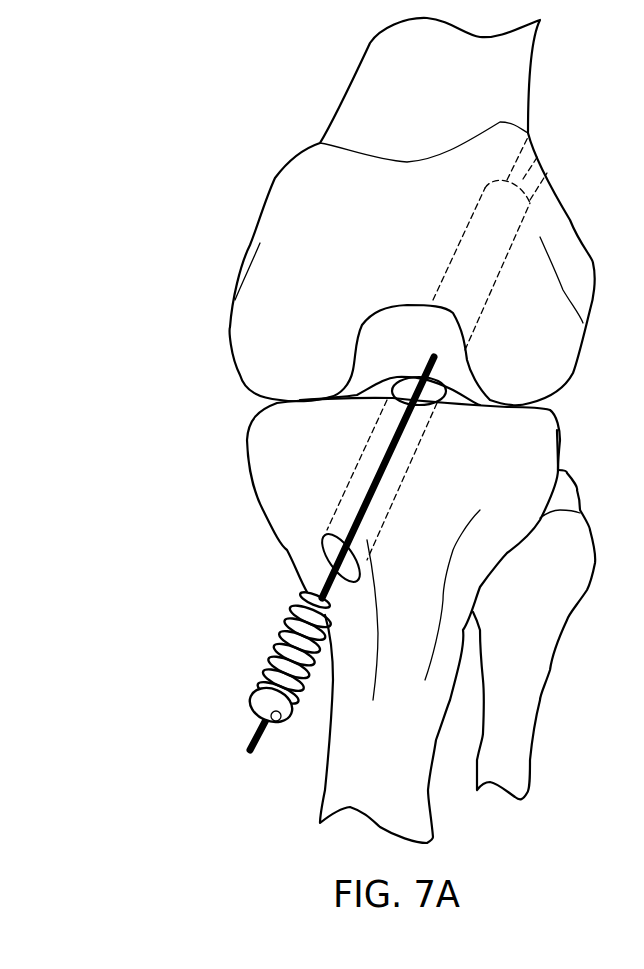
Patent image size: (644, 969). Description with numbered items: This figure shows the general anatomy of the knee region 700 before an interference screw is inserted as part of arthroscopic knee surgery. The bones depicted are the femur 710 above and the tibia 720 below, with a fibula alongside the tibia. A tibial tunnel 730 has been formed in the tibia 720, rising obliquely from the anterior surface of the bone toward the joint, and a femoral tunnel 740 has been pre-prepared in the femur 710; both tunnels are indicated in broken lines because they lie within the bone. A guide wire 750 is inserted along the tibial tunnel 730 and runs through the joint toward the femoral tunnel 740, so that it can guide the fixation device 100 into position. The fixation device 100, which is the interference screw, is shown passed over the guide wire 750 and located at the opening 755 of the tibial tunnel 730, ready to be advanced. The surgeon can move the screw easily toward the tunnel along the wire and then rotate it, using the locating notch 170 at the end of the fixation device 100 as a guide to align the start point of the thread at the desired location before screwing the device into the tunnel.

The knee region 700 is at (322, 440).
The femur 710 is at (497, 77).
The tibia 720 is at (410, 788).
The femoral tunnel 740 is at (457, 250).
The tibial tunnel 730 is at (357, 463).
The opening 755 is at (327, 550).
The guide wire 750 is at (377, 497).
The fixation device 100 is at (225, 692).
The locating notch 170 is at (287, 723).